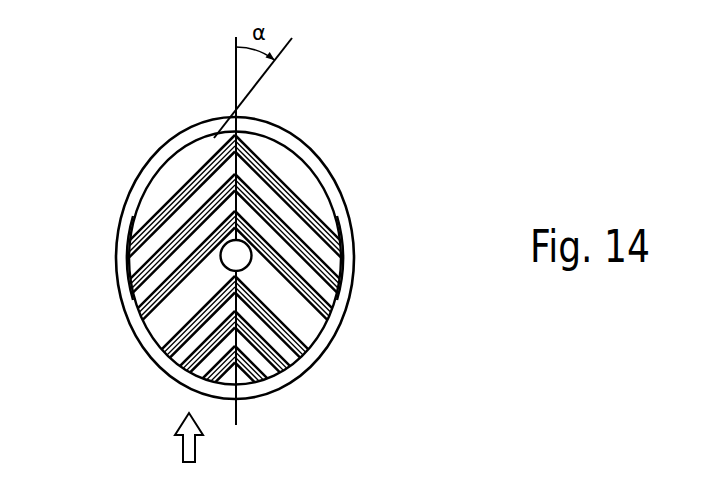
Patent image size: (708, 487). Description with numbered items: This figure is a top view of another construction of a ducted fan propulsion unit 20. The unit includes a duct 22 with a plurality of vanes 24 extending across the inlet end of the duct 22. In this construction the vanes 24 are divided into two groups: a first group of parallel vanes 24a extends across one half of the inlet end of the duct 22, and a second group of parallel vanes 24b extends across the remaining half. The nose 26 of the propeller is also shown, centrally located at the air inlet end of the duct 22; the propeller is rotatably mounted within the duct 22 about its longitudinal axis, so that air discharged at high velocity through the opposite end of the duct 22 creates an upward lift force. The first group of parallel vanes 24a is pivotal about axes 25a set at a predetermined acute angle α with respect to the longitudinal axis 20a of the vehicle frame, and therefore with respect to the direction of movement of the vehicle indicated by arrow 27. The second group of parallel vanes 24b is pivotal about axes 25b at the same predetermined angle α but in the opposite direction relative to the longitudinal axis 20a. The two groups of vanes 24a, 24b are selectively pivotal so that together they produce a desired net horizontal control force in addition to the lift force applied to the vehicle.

The ducted fan propulsion unit 20 is at (241, 301).
The longitudinal axis 20a is at (235, 98).
The duct 22 is at (343, 197).
The vanes 24 is at (241, 311).
The first group of parallel vanes 24a is at (137, 317).
The second group of parallel vanes 24b is at (320, 347).
The axes 25a is at (133, 230).
The axes 25b is at (320, 266).
The nose of the propeller 26 is at (247, 259).
The arrow 27 is at (188, 445).